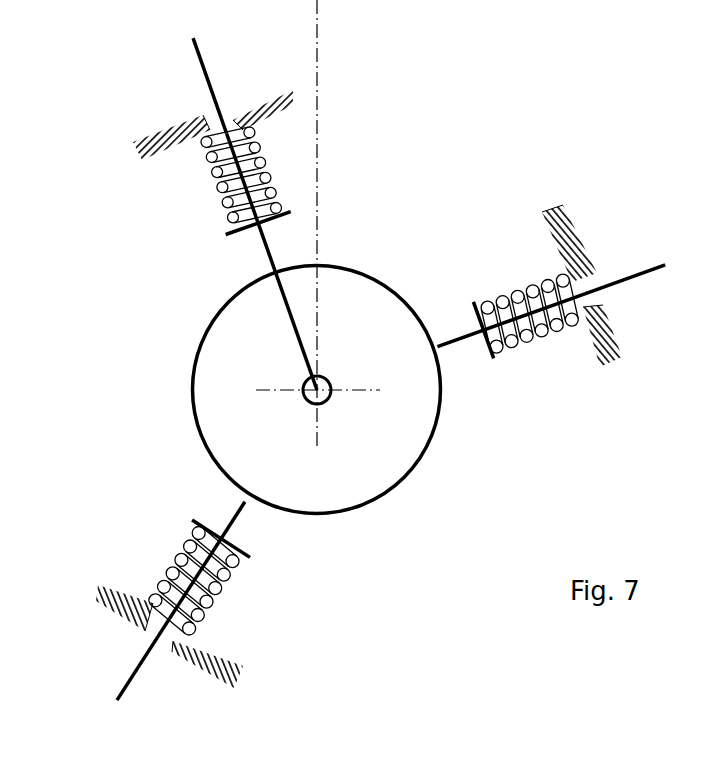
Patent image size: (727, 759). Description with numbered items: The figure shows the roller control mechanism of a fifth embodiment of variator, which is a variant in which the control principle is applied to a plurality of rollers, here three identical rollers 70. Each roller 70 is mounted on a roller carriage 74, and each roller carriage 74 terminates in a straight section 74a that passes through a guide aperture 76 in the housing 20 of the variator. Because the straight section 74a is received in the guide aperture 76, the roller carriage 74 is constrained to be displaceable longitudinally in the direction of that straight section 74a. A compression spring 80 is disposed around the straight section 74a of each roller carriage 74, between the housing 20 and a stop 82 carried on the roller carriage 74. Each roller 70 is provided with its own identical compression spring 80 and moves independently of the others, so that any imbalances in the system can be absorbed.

The roller 70 is at (412, 440).
The roller carriage 74 is at (272, 260).
The straight section 74a is at (200, 58).
The guide aperture 76 is at (225, 110).
The housing 20 is at (155, 138).
The compression spring 80 is at (262, 161).
The stop 82 is at (268, 226).